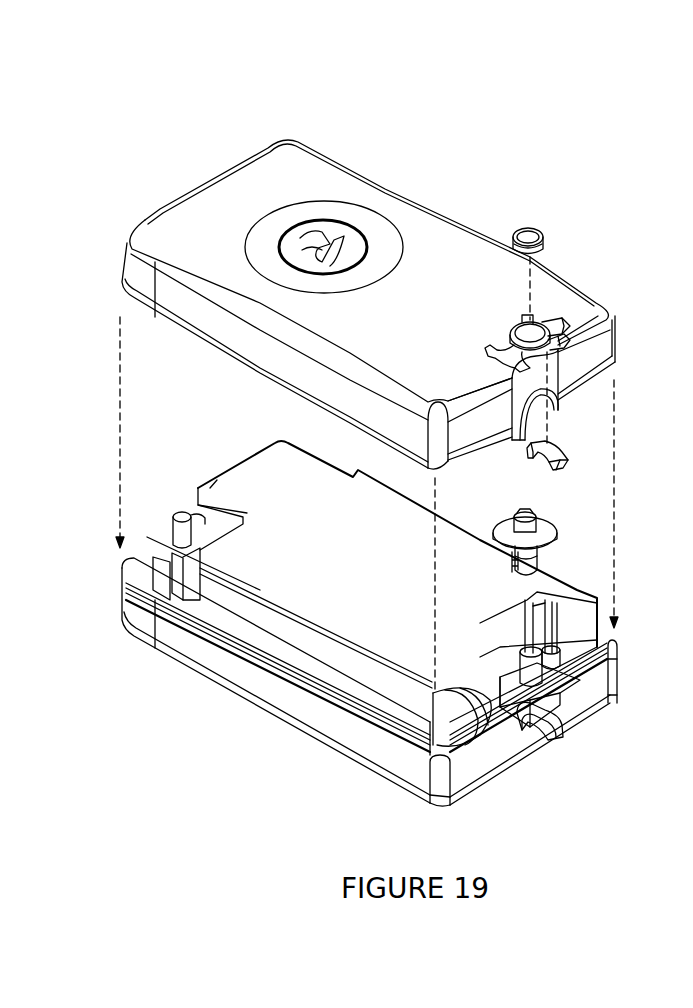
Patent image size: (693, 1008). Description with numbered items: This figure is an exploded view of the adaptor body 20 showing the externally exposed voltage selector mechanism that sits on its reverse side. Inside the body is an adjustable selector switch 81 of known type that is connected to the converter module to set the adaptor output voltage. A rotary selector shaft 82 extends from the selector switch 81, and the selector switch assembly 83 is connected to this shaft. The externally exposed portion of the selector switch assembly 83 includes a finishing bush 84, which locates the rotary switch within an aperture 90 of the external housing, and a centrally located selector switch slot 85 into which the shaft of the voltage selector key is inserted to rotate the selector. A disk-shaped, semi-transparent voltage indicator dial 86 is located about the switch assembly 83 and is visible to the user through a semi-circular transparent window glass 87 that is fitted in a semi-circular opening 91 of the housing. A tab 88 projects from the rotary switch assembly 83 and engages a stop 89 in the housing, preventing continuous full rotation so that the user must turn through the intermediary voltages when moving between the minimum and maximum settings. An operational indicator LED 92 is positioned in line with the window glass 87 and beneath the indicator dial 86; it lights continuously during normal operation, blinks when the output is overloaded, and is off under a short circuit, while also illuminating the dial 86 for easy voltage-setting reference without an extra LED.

The adaptor body 20 is at (478, 122).
The selector switch 81 is at (523, 690).
The rotary selector shaft 82 is at (538, 671).
The selector switch assembly 83 is at (532, 567).
The finishing bush 84 is at (551, 235).
The selector switch slot 85 is at (516, 512).
The voltage indicator dial 86 is at (549, 532).
The window glass 87 is at (552, 444).
The tab 88 is at (512, 549).
The stop 89 is at (512, 337).
The aperture 90 is at (555, 344).
The opening 91 is at (543, 332).
The operational indicator LED 92 is at (553, 646).